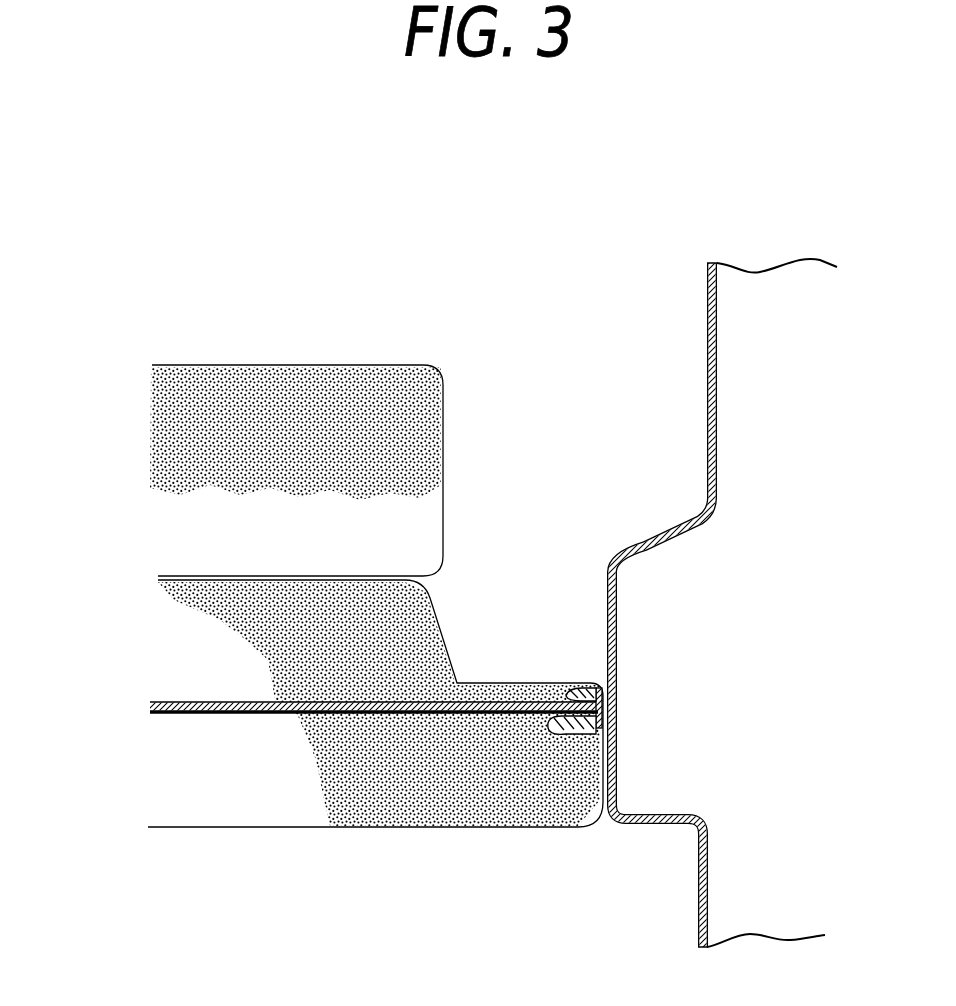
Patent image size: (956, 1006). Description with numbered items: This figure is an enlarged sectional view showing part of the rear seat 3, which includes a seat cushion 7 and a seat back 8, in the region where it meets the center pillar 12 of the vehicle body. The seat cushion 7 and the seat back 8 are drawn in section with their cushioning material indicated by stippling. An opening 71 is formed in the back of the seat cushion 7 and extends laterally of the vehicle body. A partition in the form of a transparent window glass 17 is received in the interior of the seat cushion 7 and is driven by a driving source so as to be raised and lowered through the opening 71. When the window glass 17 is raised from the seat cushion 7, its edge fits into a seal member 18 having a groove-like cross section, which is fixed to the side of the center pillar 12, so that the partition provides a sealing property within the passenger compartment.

The rear seat 3 is at (371, 353).
The seat cushion 7 is at (237, 833).
The opening 71 is at (290, 717).
The seat back 8 is at (264, 364).
The center pillar 12 is at (650, 540).
The window glass 17 is at (192, 718).
The seal member 18 is at (540, 733).